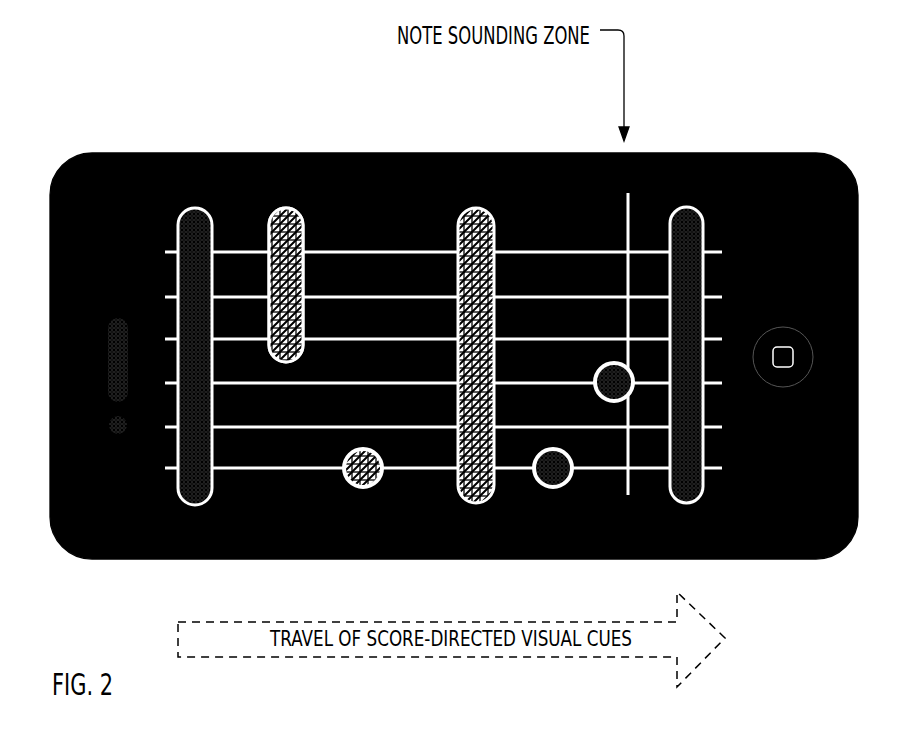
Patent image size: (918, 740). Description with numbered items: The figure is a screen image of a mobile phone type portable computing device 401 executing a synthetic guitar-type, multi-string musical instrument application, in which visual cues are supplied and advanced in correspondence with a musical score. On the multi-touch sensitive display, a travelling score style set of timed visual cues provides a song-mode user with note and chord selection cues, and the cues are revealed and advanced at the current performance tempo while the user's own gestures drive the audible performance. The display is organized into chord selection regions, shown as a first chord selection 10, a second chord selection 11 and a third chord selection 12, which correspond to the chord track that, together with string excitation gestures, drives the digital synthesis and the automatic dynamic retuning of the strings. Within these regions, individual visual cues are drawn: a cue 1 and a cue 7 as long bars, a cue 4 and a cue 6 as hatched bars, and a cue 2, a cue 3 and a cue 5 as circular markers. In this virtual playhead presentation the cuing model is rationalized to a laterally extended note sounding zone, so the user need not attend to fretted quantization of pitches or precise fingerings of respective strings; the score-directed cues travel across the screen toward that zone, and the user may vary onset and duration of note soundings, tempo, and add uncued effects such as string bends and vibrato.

The handheld device 401 is at (129, 566).
The chord selection 12 is at (222, 138).
The chord selection 11 is at (510, 138).
The chord selection 10 is at (848, 98).
The cue 1 is at (795, 246).
The cue 2 is at (597, 370).
The cue 3 is at (568, 484).
The cue 4 is at (492, 214).
The cue 5 is at (378, 484).
The cue 6 is at (300, 214).
The cue 7 is at (208, 490).